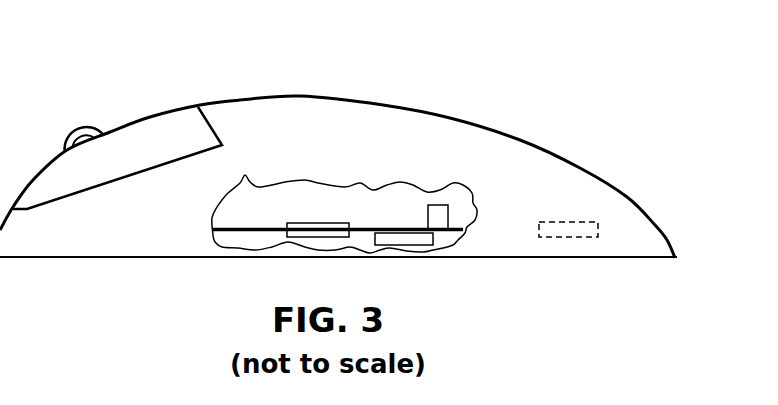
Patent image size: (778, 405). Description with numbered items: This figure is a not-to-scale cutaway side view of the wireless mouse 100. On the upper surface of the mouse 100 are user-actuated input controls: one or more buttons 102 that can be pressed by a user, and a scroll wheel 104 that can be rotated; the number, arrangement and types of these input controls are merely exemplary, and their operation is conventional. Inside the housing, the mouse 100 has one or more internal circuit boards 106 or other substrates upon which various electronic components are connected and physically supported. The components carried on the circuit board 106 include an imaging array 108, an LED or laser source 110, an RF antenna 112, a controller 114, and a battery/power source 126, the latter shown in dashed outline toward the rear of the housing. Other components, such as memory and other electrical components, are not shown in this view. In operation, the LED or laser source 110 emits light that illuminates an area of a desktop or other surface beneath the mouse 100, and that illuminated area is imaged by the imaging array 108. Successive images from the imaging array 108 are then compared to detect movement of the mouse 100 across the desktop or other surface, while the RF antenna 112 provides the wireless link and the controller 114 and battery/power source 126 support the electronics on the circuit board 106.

The mouse 100 is at (520, 140).
The buttons 102 is at (157, 115).
The scroll wheel 104 is at (90, 127).
The internal circuit board 106 is at (252, 229).
The imaging array 108 is at (308, 235).
The LED or laser source 110 is at (432, 246).
The RF antenna 112 is at (442, 205).
The controller 114 is at (335, 224).
The battery/power source 126 is at (585, 222).